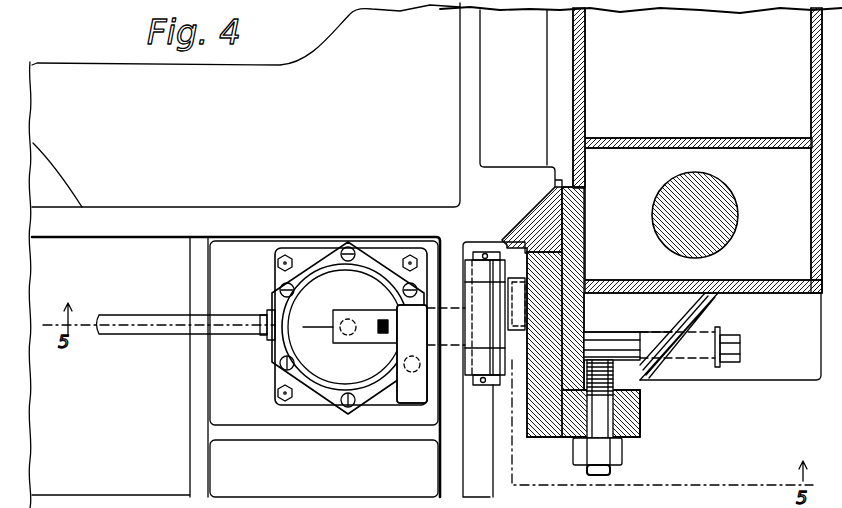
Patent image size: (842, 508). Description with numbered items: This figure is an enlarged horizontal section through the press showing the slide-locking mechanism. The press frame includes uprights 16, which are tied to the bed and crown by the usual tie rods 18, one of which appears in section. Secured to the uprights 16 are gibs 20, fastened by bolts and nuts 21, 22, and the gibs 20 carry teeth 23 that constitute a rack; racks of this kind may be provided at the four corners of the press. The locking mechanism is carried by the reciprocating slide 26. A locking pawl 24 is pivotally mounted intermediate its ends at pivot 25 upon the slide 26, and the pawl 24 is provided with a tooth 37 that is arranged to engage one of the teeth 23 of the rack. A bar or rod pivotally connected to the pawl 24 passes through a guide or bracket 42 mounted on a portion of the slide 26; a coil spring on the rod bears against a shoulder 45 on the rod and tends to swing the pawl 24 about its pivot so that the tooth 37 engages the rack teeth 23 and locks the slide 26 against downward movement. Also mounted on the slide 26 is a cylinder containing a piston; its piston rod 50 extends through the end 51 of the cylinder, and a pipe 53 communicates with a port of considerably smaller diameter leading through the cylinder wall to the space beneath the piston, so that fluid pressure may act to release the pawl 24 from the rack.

The uprights 16 is at (585, 97).
The tie rods 18 is at (672, 232).
The gibs 20 is at (640, 420).
The bolts and nuts 21 is at (632, 438).
The nut 22 is at (615, 460).
The teeth 23 is at (520, 307).
The locking pawl 24 is at (367, 345).
The pivot 25 is at (483, 385).
The slide 26 is at (102, 77).
The tooth 37 is at (510, 230).
The guide or bracket 42 is at (407, 398).
The shoulder 45 is at (390, 321).
The piston rod 50 is at (348, 320).
The end of the cylinder 51 is at (303, 345).
The pipe 53 is at (152, 309).